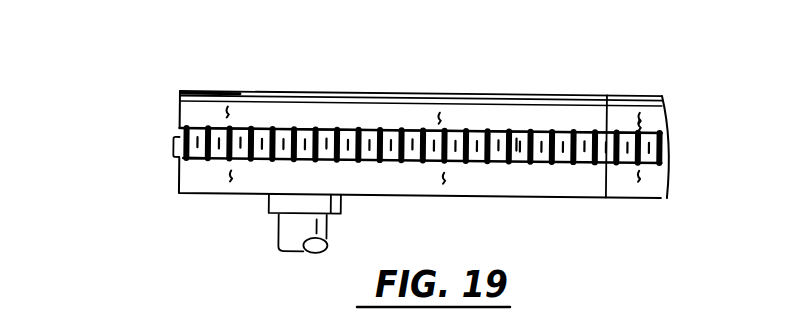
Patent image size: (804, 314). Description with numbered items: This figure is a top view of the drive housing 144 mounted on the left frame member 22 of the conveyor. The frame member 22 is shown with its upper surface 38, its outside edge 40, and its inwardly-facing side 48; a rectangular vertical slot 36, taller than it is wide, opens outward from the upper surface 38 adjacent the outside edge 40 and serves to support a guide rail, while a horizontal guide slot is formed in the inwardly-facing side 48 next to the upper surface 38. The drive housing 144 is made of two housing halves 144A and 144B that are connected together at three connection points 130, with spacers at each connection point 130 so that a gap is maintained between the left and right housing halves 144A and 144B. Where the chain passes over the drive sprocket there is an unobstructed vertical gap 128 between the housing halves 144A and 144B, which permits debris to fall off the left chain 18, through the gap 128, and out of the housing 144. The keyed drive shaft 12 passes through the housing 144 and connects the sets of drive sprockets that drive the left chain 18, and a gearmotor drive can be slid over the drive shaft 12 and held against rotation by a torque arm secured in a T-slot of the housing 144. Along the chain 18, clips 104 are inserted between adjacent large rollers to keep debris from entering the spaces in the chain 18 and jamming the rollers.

The drive shaft 12 is at (287, 238).
The left chain 18 is at (377, 128).
The left frame member 22 is at (647, 103).
The vertical slot 36 is at (327, 101).
The upper surface 38 is at (224, 116).
The outside edge 40 is at (588, 94).
The inwardly-facing side 48 is at (598, 200).
The clip 104 is at (550, 138).
The vertical gap 128 is at (197, 161).
The connection point 130 is at (178, 143).
The drive housing 144 is at (460, 96).
The left housing half 144A is at (208, 72).
The right housing half 144B is at (475, 198).